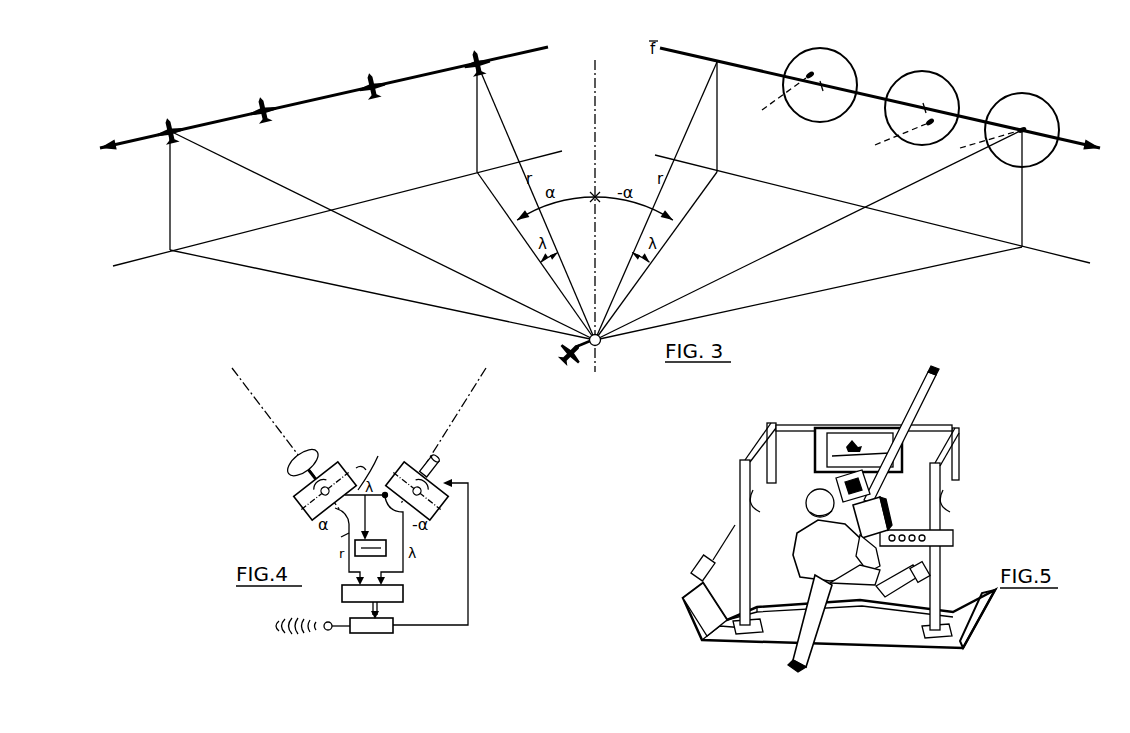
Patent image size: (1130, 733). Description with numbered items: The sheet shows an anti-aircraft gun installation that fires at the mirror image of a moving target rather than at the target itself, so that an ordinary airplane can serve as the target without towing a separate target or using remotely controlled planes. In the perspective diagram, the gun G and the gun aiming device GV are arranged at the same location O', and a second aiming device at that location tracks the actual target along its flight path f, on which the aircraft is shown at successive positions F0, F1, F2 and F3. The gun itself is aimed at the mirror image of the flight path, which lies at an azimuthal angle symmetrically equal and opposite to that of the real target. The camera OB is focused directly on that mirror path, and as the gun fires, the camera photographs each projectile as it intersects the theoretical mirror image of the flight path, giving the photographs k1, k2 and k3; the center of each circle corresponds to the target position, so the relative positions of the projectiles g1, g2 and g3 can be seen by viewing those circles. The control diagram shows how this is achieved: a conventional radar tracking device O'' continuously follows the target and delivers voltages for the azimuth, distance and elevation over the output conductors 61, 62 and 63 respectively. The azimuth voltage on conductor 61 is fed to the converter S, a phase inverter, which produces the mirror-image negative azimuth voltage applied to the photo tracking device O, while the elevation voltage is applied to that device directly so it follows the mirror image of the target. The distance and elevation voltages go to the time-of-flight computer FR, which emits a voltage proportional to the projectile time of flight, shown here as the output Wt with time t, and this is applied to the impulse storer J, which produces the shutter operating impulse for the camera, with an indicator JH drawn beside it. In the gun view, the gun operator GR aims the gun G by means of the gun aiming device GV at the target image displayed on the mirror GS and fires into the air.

In FIG. 3, the flight path f is at (329, 94).
In FIG. 3, the target aircraft position F0 is at (472, 60).
In FIG. 3, the target aircraft position F1 is at (368, 82).
In FIG. 3, the target aircraft position F2 is at (259, 104).
In FIG. 3, the target aircraft position F3 is at (166, 127).
In FIG. 3, the photograph k1 is at (862, 45).
In FIG. 3, the photograph k2 is at (965, 68).
In FIG. 3, the photograph k3 is at (1063, 90).
In FIG. 3, the projectile g1 is at (807, 73).
In FIG. 3, the projectile g2 is at (928, 125).
In FIG. 3, the projectile g3 is at (1020, 134).
In FIG. 3, the location O' is at (606, 349).
In FIG. 3, the gun G is at (566, 353).
In FIG. 5, the gun G is at (868, 512).
In FIG. 4, the radar tracking device O'' is at (316, 478).
In FIG. 4, the photo tracking device O is at (437, 491).
In FIG. 4, the camera OB is at (439, 469).
In FIG. 4, the output conductor 63 is at (372, 464).
In FIG. 4, the output conductor 61 is at (366, 517).
In FIG. 4, the output conductor 62 is at (335, 536).
In FIG. 4, the converter S is at (355, 548).
In FIG. 4, the time-of-flight computer FR is at (383, 592).
In FIG. 4, the weapon data signal Wt is at (379, 606).
In FIG. 4, the time signal t is at (372, 615).
In FIG. 4, the impulse storer J is at (377, 625).
In FIG. 4, the audible indicator JH is at (328, 630).
In FIG. 5, the mirror GS is at (841, 442).
In FIG. 5, the gun aiming device GV is at (837, 485).
In FIG. 5, the gun operator GR is at (817, 547).